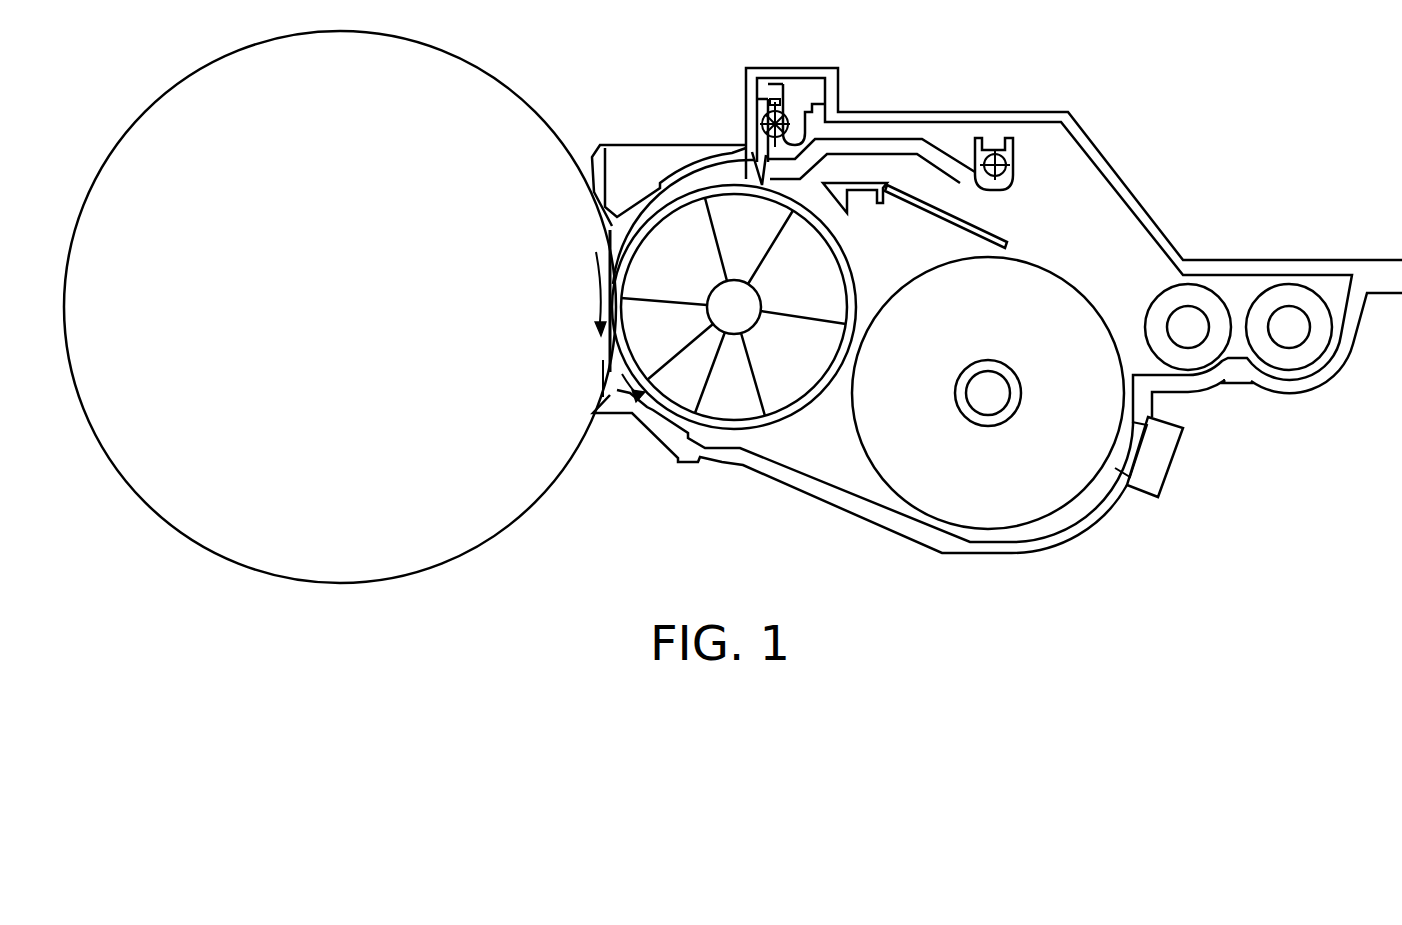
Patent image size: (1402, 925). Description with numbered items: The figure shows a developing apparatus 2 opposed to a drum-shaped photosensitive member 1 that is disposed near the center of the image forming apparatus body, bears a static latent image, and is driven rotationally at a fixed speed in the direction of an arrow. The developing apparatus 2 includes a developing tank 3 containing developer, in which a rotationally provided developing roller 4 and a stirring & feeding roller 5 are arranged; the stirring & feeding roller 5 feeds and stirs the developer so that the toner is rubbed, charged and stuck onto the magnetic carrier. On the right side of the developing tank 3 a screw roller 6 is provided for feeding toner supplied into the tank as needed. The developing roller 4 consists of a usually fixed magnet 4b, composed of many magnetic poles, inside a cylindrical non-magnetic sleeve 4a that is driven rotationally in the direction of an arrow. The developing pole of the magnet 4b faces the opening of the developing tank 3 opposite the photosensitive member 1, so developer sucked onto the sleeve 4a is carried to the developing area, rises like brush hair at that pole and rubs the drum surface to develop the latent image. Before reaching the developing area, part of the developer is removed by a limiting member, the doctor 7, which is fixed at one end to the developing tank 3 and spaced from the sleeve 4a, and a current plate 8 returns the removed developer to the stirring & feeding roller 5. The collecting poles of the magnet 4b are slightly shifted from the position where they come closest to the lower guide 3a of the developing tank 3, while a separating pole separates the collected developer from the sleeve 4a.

The photosensitive member 1 is at (487, 92).
The developing apparatus 2 is at (1021, 95).
The developing tank 3 is at (1048, 556).
The lower guide 3a is at (655, 418).
The developing roller 4 is at (734, 349).
The sleeve 4a is at (772, 423).
The magnet 4b is at (787, 387).
The stirring & feeding roller 5 is at (1058, 488).
The screw roller 6 is at (1203, 300).
The limiting member (doctor) 7 is at (750, 150).
The current plate 8 is at (917, 200).